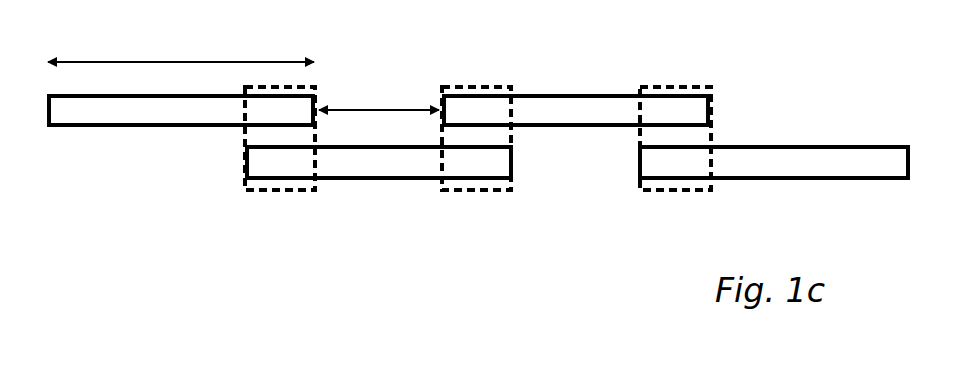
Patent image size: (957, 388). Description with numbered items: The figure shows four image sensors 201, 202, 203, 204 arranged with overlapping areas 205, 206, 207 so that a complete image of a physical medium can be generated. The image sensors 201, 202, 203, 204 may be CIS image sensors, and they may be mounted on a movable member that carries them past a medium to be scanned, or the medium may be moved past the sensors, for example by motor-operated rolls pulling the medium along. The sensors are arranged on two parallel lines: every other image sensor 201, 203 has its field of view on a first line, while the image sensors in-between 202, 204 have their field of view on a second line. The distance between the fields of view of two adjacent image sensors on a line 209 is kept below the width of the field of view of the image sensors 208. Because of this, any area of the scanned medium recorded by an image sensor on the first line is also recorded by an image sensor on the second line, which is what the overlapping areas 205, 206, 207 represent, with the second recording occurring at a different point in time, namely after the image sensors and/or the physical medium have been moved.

The image sensor 201 is at (166, 142).
The image sensor 202 is at (379, 190).
The image sensor 203 is at (576, 76).
The image sensor 204 is at (774, 139).
The overlapping area 205 is at (231, 138).
The overlapping area 206 is at (446, 102).
The overlapping area 207 is at (659, 103).
The width of the field of view of the image sensors 208 is at (181, 44).
The distance between the field of view of two adjacent image sensors on a line 209 is at (379, 91).